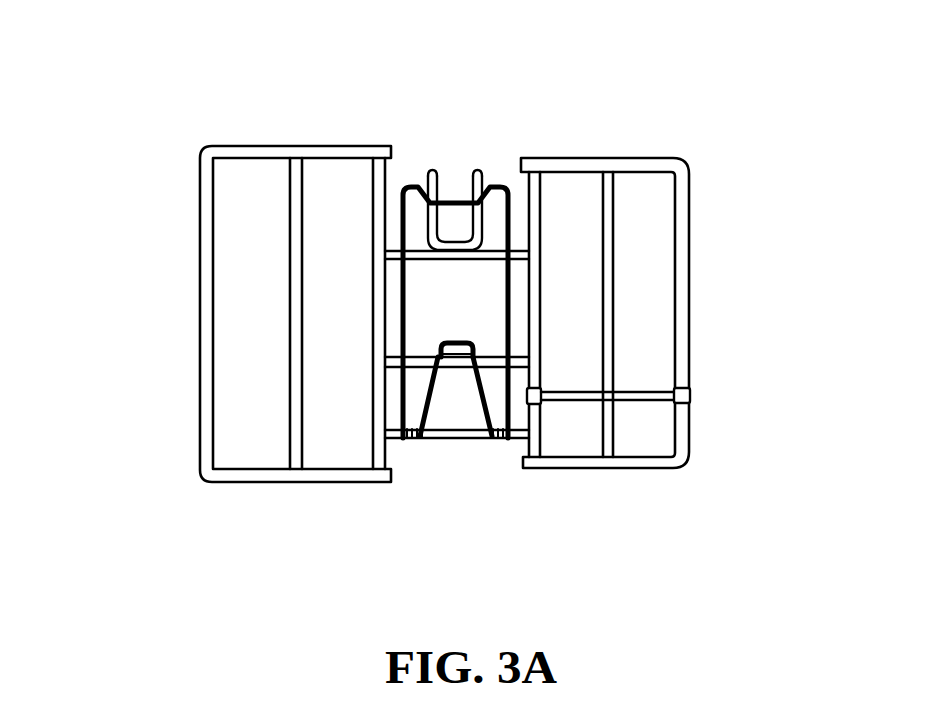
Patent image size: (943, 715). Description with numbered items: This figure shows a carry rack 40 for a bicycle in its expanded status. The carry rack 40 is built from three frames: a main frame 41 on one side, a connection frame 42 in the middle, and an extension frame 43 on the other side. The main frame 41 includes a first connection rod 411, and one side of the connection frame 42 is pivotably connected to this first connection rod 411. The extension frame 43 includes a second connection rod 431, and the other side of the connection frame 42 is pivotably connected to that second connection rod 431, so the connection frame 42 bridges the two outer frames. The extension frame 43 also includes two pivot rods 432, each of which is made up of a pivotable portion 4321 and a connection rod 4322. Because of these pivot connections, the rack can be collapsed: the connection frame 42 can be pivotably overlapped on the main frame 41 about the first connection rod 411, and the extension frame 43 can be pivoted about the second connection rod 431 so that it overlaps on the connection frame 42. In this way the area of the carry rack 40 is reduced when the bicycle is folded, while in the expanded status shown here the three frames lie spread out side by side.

The carry rack 40 is at (167, 111).
The main frame 41 is at (265, 473).
The first connection rod 411 is at (373, 413).
The connection frame 42 is at (456, 436).
The extension frame 43 is at (638, 460).
The second connection rod 431 is at (536, 412).
The pivot rod 432 is at (551, 385).
The pivotable portion 4321 is at (690, 397).
The connection rod 4322 is at (633, 393).